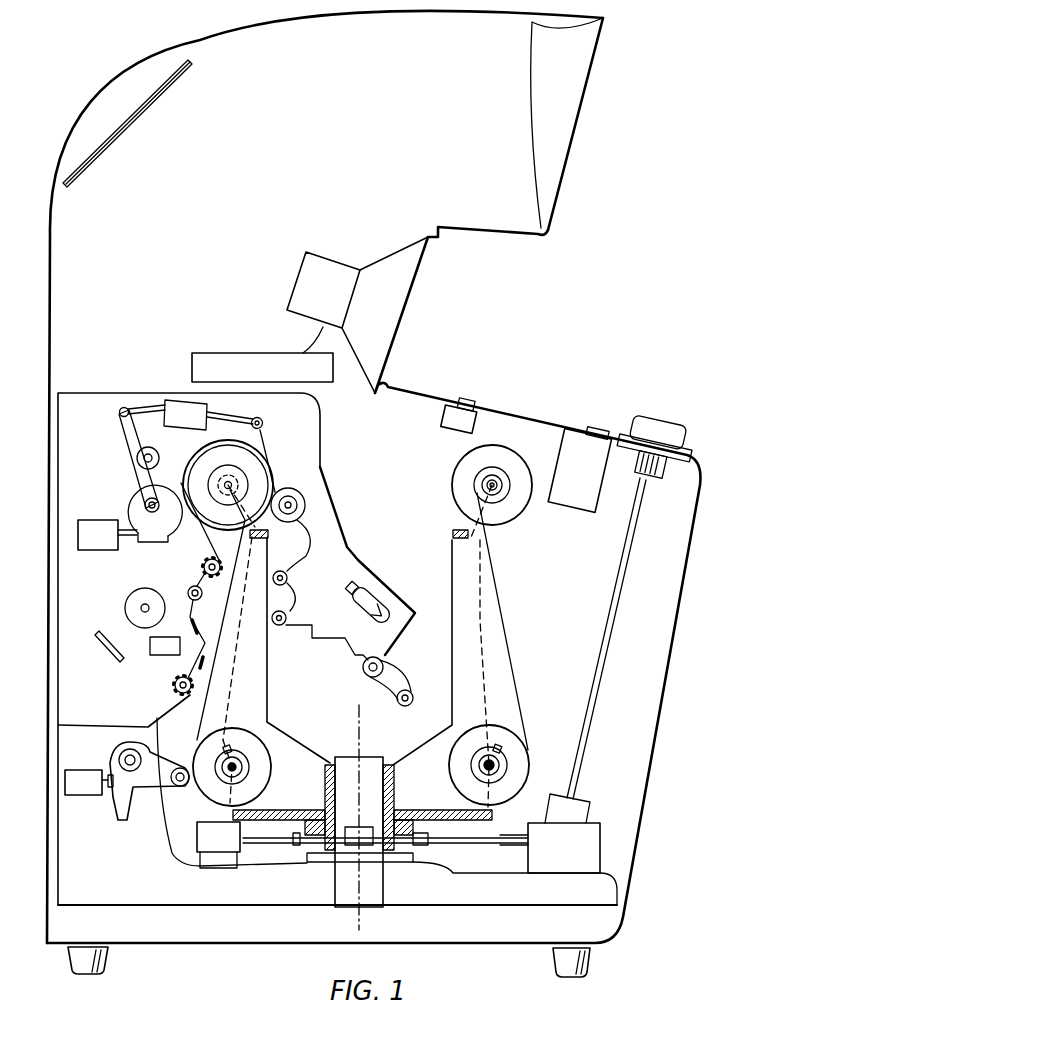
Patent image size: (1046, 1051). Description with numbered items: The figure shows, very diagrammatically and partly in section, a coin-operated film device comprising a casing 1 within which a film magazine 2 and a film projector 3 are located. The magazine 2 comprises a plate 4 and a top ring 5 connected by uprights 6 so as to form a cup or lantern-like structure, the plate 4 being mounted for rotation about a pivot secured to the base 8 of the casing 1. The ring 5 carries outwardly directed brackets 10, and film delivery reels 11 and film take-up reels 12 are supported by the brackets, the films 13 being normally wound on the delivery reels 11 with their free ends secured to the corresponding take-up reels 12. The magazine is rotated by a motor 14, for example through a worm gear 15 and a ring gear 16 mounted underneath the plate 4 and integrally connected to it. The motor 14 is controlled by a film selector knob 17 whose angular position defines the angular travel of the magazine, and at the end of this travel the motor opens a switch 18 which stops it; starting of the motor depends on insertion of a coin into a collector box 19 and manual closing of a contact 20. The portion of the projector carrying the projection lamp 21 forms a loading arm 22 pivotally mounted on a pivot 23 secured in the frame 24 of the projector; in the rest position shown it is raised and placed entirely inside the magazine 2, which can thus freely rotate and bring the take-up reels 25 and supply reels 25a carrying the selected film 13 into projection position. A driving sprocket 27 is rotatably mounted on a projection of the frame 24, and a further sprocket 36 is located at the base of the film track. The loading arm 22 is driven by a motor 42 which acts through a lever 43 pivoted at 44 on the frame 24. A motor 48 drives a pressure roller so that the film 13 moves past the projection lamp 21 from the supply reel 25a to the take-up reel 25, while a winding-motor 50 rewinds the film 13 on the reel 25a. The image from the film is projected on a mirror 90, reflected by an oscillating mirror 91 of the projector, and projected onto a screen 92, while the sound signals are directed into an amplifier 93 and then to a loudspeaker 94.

The casing 1 is at (664, 713).
The film magazine 2 is at (448, 650).
The film projector 3 is at (102, 393).
The plate 4 is at (427, 810).
The top ring 5 is at (452, 534).
The uprights 6 is at (475, 672).
The base 8 is at (512, 897).
The brackets 10 is at (463, 523).
The film delivery reels 11 is at (498, 750).
The film take-up reels 12 is at (458, 472).
The films 13 is at (205, 718).
The motor 14 is at (197, 843).
The worm gear 15 is at (350, 843).
The ring gear 16 is at (413, 843).
The film selector knob 17 is at (645, 415).
The switch 18 is at (590, 830).
The collector box 19 is at (588, 430).
The contact 20 is at (470, 398).
The projection lamp 21 is at (370, 600).
The loading arm 22 is at (352, 543).
The pivot 23 is at (298, 505).
The frame 24 is at (137, 400).
The take-up reels 25 is at (196, 478).
The supply reels 25a is at (262, 770).
The driving sprocket 27 is at (204, 570).
The sprocket 36 is at (175, 683).
The motor 42 is at (97, 520).
The lever 43 is at (127, 432).
The pivot 44 is at (138, 460).
The motor 48 is at (130, 607).
The winding-motor 50 is at (87, 790).
The mirror 90 is at (128, 118).
The oscillating mirror 91 is at (107, 652).
The screen 92 is at (545, 90).
The amplifier 93 is at (240, 365).
The loudspeaker 94 is at (412, 300).